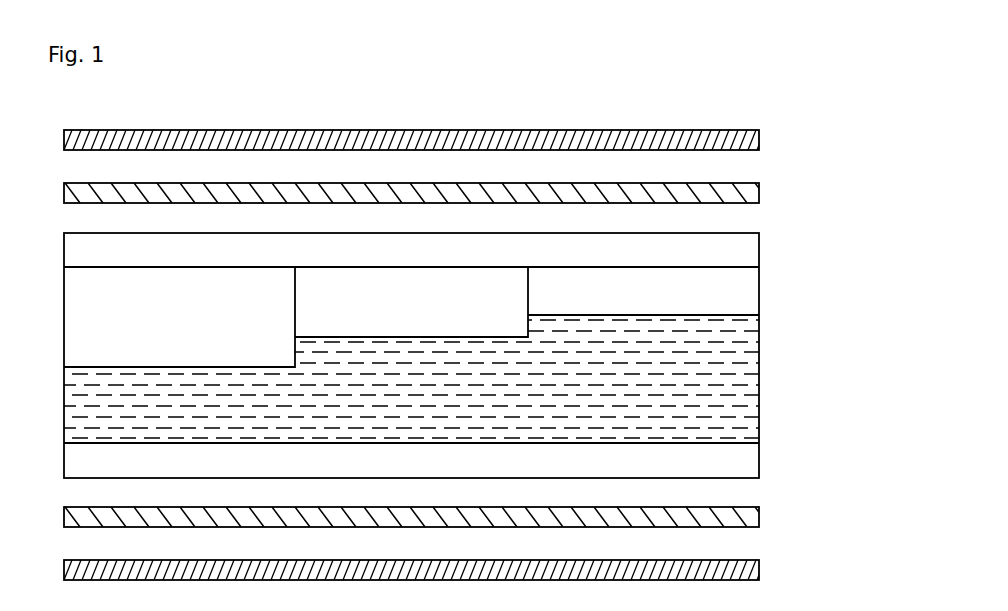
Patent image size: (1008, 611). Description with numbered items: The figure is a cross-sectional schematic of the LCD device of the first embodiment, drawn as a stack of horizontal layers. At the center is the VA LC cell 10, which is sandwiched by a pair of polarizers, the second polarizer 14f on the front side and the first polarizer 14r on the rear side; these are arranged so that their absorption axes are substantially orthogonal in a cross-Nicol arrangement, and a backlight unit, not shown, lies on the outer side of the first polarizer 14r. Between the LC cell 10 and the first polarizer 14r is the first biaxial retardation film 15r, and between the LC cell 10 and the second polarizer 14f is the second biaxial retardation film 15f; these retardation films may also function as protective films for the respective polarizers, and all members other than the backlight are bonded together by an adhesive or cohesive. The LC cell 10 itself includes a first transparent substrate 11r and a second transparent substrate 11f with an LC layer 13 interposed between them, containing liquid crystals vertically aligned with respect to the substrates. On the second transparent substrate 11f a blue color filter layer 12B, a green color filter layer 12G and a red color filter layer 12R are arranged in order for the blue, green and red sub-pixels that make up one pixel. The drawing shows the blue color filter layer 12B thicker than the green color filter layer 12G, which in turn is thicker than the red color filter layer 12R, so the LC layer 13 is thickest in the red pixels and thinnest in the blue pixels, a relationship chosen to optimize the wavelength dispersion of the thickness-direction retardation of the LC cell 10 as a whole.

The VA LC cell 10 is at (832, 237).
The second transparent substrate 11f is at (750, 253).
The first transparent substrate 11r is at (752, 464).
The blue color filter layer 12B is at (180, 285).
The green color filter layer 12G is at (407, 283).
The red color filter layer 12R is at (646, 283).
The LC layer 13 is at (750, 373).
The second polarizer 14f is at (759, 140).
The first polarizer 14r is at (759, 570).
The second biaxial retardation film 15f is at (759, 192).
The first biaxial retardation film 15r is at (759, 517).